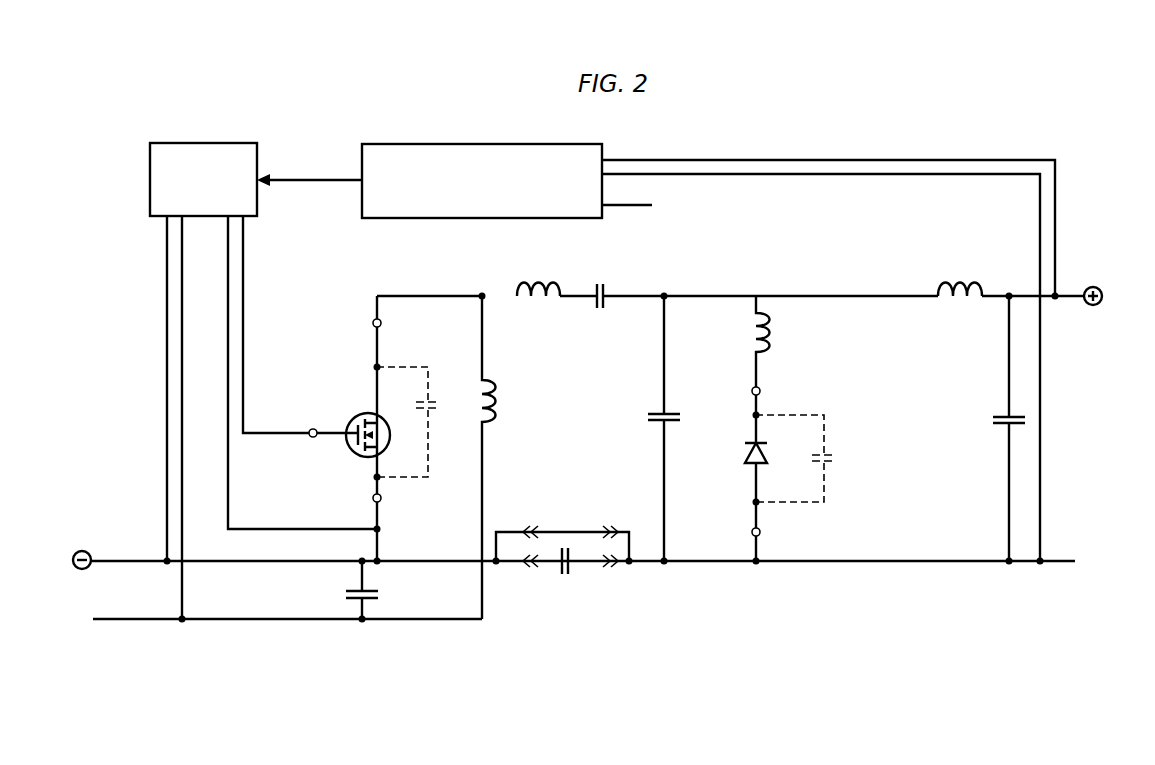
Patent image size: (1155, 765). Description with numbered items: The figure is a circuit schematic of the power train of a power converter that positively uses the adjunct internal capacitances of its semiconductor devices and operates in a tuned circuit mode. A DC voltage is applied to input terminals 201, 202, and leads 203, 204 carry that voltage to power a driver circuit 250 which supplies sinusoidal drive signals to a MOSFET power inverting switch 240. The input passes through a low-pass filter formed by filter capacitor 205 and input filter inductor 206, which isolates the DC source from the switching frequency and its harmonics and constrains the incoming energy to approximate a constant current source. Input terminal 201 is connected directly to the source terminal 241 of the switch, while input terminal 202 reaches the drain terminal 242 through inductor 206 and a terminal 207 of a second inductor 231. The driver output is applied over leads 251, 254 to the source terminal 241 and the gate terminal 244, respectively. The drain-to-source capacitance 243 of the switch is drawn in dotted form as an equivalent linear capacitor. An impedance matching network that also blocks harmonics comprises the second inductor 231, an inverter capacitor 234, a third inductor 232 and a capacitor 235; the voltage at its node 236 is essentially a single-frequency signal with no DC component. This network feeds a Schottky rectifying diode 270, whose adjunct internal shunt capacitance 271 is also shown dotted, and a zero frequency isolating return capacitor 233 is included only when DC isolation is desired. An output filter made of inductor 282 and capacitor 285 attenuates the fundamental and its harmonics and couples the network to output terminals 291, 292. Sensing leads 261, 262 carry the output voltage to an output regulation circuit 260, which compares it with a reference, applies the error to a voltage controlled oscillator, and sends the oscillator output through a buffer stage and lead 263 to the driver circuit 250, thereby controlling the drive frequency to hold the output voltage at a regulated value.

The input terminal 201 is at (129, 558).
The input terminal 202 is at (134, 616).
The lead 203 is at (161, 471).
The lead 204 is at (183, 471).
The filter capacitor 205 is at (378, 596).
The input filter inductor 206 is at (507, 457).
The terminal of inductor 207 is at (500, 292).
The second inductor 231 is at (538, 278).
The third inductor 232 is at (742, 341).
The zero frequency isolating return capacitor 233 is at (563, 562).
The inverter capacitor 234 is at (602, 284).
The capacitor 235 is at (650, 430).
The node 236 is at (667, 294).
The power inverting switch 240 is at (353, 430).
The source terminal 241 is at (382, 498).
The drain terminal 242 is at (382, 323).
The drain to source capacitance 243 is at (419, 422).
The gate terminal 244 is at (314, 455).
The driver circuit 250 is at (192, 143).
The lead 251 is at (224, 284).
The lead 254 is at (244, 286).
The output regulation circuit 260 is at (398, 144).
The sensing lead 261 is at (1058, 229).
The sensing lead 262 is at (1042, 396).
The lead 263 is at (315, 178).
The Schottky rectifying diode 270 is at (741, 475).
The adjunct internal shunt capacitance 271 is at (815, 459).
The inductor 282 is at (960, 278).
The capacitor 285 is at (995, 429).
The output terminal 291 is at (1069, 296).
The output terminal 292 is at (1049, 561).